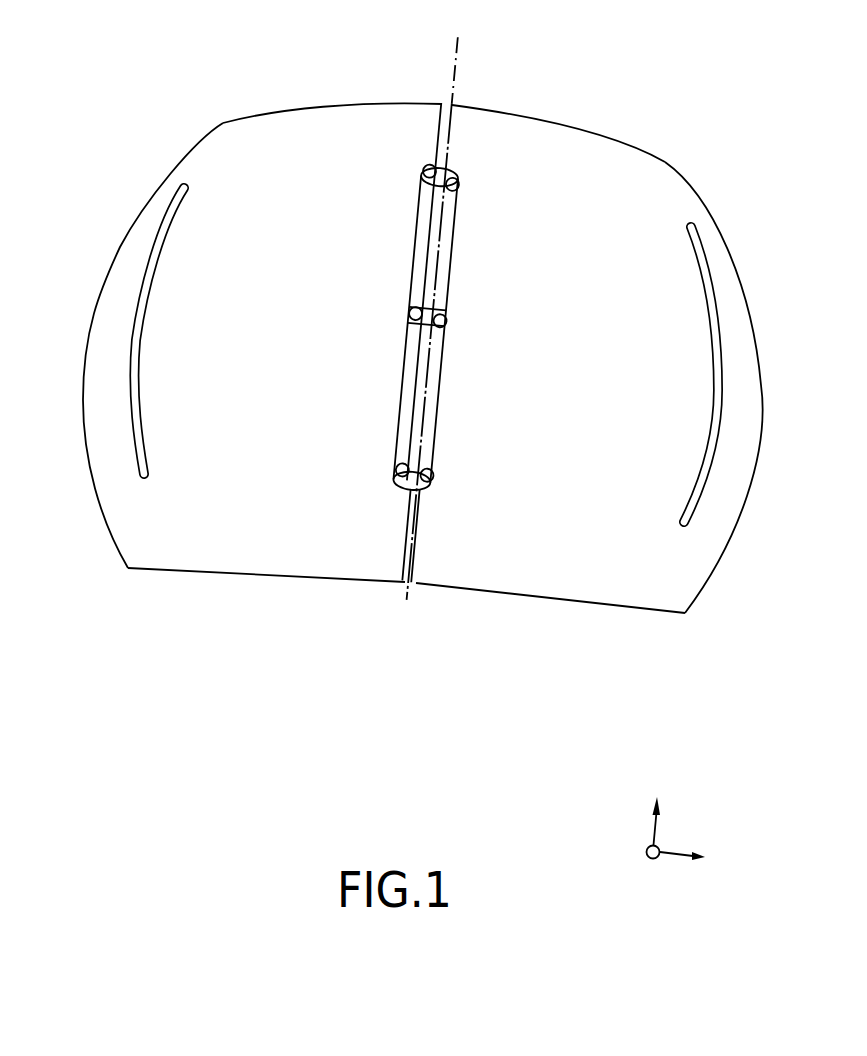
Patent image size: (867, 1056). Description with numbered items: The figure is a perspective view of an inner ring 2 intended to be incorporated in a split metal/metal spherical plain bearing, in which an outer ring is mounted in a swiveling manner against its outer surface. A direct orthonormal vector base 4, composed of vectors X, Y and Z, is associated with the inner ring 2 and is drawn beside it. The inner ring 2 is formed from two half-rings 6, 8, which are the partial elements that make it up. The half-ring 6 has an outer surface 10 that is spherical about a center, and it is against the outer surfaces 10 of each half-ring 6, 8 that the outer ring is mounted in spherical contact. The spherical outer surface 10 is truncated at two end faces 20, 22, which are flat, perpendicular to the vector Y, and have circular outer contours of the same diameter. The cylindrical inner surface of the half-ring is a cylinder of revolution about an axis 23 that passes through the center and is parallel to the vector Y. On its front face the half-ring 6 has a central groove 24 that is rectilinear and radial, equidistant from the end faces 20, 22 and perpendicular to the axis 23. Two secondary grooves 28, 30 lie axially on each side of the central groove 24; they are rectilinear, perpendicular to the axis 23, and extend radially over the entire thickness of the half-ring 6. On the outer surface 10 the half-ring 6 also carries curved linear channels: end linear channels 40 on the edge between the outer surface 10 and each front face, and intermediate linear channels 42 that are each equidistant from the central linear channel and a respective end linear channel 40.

The inner ring 2 is at (683, 61).
The direct orthonormal vector base 4 is at (707, 786).
The half-ring 6 is at (107, 348).
The half-ring 8 is at (738, 378).
The outer surface 10 is at (365, 550).
The end face 20 is at (333, 102).
The end face 22 is at (322, 578).
The axis 23 is at (455, 46).
The central groove 24 is at (414, 312).
The secondary groove 28 is at (403, 470).
The secondary groove 30 is at (429, 176).
The end linear channel 40 is at (409, 365).
The intermediate linear channel 42 is at (151, 257).